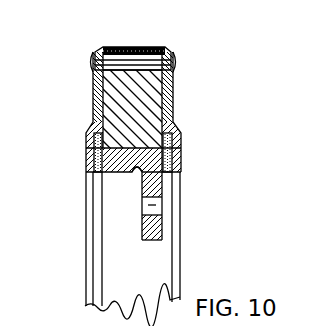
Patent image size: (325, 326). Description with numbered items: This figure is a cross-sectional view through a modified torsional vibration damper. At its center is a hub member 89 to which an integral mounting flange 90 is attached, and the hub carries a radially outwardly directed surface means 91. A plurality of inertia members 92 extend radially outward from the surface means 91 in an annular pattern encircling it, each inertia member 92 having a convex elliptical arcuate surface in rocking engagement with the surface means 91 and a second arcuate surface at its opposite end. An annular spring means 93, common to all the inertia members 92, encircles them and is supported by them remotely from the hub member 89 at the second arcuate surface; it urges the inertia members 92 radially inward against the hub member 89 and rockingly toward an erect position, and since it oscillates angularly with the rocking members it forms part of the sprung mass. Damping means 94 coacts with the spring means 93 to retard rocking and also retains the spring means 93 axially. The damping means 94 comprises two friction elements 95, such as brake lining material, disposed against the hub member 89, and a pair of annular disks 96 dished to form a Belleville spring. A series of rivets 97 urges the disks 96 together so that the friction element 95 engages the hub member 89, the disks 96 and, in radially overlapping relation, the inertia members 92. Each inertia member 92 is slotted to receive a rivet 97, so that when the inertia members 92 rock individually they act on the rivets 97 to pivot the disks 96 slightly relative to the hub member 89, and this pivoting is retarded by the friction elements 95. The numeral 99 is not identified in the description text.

The hub member 89 is at (125, 173).
The mounting flange 90 is at (153, 240).
The radially outwardly directed surface means 91 is at (133, 175).
The inertia member 92 is at (146, 113).
The annular spring means 93 is at (147, 46).
The damping means 94 is at (83, 147).
The friction element 95 is at (86, 163).
The annular disk 96 is at (175, 92).
The rivet 97 is at (173, 63).
The gasket 99 is at (175, 149).